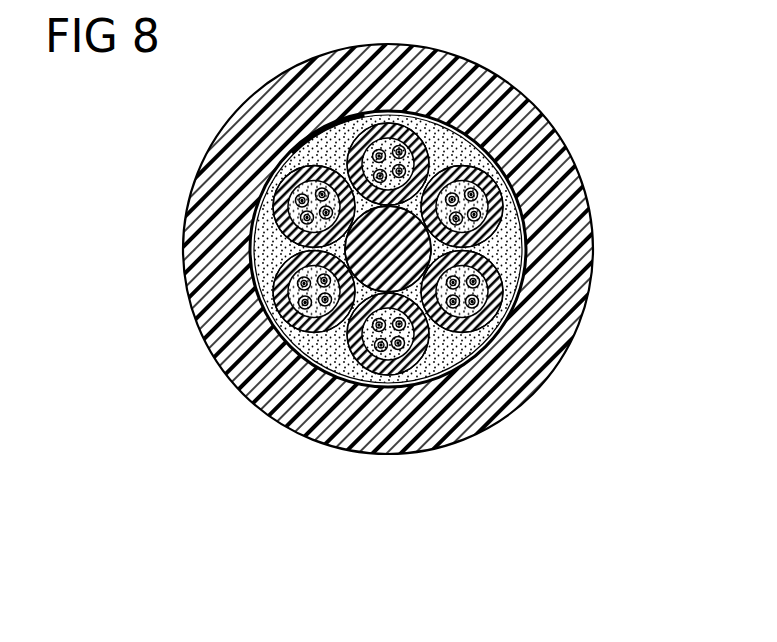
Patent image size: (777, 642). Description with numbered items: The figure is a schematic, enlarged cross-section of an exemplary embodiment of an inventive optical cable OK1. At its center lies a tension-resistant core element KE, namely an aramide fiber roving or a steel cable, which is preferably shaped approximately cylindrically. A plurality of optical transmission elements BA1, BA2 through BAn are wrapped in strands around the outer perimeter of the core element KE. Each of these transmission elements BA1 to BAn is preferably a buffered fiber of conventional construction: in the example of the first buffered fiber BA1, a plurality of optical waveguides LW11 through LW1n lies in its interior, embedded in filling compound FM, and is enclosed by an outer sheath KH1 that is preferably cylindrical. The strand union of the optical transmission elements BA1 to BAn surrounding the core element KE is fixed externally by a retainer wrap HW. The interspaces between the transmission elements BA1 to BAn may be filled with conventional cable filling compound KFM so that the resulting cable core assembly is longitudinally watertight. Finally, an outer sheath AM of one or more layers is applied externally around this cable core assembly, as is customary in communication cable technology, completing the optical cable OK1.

The optical cable OK1 is at (370, 250).
The outer sheath AM is at (592, 232).
The retainer wrap HW is at (302, 142).
The filling compound FM is at (388, 255).
The cable filling compound KFM is at (440, 362).
The core element KE is at (408, 272).
The optical transmission element BA1 is at (403, 106).
The optical transmission element BA2 is at (497, 153).
The optical transmission element BAn is at (272, 227).
The outer sheath of the buffered fiber KH1 is at (343, 111).
The optical waveguide LW11 is at (354, 85).
The optical waveguide LW1n is at (420, 83).